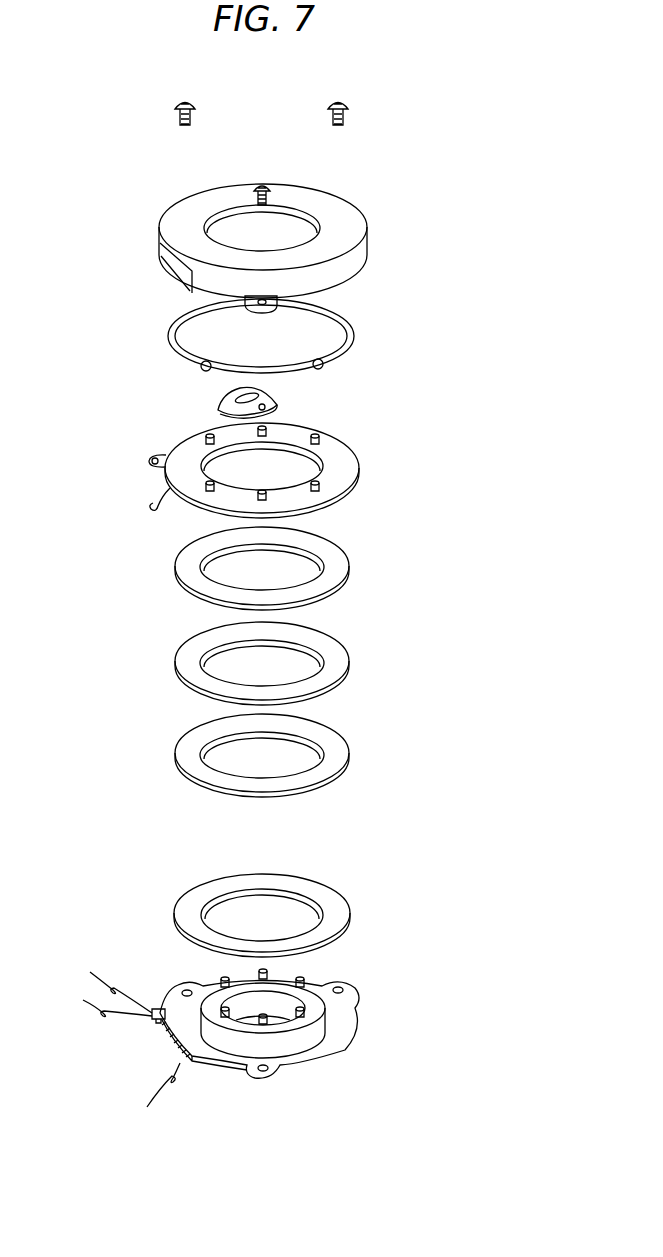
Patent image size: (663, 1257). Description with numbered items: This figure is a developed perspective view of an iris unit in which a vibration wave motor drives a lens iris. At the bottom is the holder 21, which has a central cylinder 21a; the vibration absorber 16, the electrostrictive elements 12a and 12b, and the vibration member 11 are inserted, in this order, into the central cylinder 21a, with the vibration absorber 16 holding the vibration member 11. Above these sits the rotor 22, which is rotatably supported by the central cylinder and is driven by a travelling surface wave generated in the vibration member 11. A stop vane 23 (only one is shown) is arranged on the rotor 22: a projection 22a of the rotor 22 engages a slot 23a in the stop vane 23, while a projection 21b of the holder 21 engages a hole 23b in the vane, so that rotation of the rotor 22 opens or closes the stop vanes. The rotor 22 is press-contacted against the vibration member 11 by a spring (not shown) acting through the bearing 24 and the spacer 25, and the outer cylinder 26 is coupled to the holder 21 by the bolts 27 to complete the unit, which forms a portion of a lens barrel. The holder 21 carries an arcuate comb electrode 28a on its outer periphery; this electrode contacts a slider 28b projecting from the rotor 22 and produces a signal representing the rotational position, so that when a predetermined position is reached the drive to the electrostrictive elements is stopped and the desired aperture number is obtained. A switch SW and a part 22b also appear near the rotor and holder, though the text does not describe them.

The bolts 27 is at (174, 108).
The outer cylinder 26 is at (362, 257).
The spacer 25 is at (352, 335).
The bearing 24 is at (322, 368).
The stop vane 23 is at (250, 401).
The slot 23a is at (230, 392).
The hole 23b is at (277, 402).
The rotor 22 is at (274, 488).
The projection 22a is at (340, 477).
The terminal tab 22b is at (163, 455).
The slider 28b is at (160, 506).
The vibration member 11 is at (345, 563).
The electrostrictive element 12a is at (340, 660).
The electrostrictive element 12b is at (340, 748).
The vibration absorber 16 is at (348, 910).
The holder 21 is at (261, 1030).
The central cylinder 21a is at (320, 1020).
The projection 21b is at (303, 981).
The switch SW is at (160, 1008).
The comb electrode 28a is at (150, 1040).